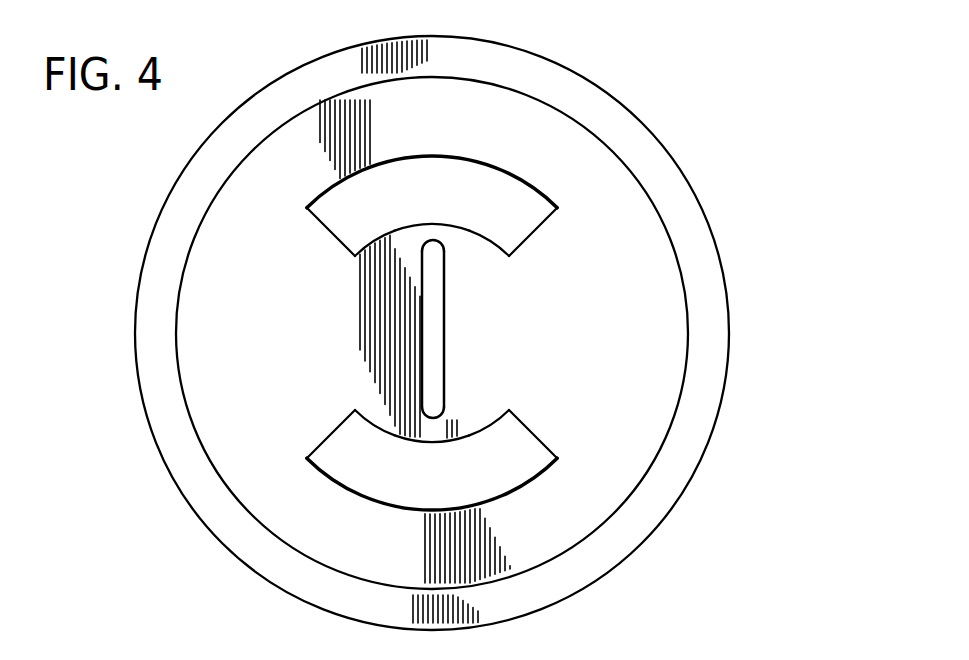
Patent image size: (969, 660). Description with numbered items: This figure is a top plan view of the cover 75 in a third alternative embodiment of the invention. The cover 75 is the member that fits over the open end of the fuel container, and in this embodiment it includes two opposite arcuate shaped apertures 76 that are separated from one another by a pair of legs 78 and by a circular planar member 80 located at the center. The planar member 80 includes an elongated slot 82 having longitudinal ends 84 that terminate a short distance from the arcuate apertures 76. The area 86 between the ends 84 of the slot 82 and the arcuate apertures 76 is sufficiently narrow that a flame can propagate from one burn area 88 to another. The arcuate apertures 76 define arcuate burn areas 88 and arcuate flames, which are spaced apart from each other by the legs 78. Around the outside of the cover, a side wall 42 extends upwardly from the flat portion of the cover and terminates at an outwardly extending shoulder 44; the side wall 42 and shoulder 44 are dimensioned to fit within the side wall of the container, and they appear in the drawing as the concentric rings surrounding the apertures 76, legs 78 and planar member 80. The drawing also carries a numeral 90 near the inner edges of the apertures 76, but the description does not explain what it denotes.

The cover 75 is at (408, 333).
The side wall 42 is at (200, 226).
The shoulder 44 is at (142, 270).
The arcuate shaped apertures 76 is at (411, 331).
The legs 78 is at (315, 357).
The circular planar member 80 is at (506, 366).
The elongated slot 82 is at (486, 329).
The longitudinal ends 84 is at (438, 245).
The area 86 is at (437, 234).
The burn areas 88 is at (355, 212).
The inner edge of segment 90 is at (418, 226).